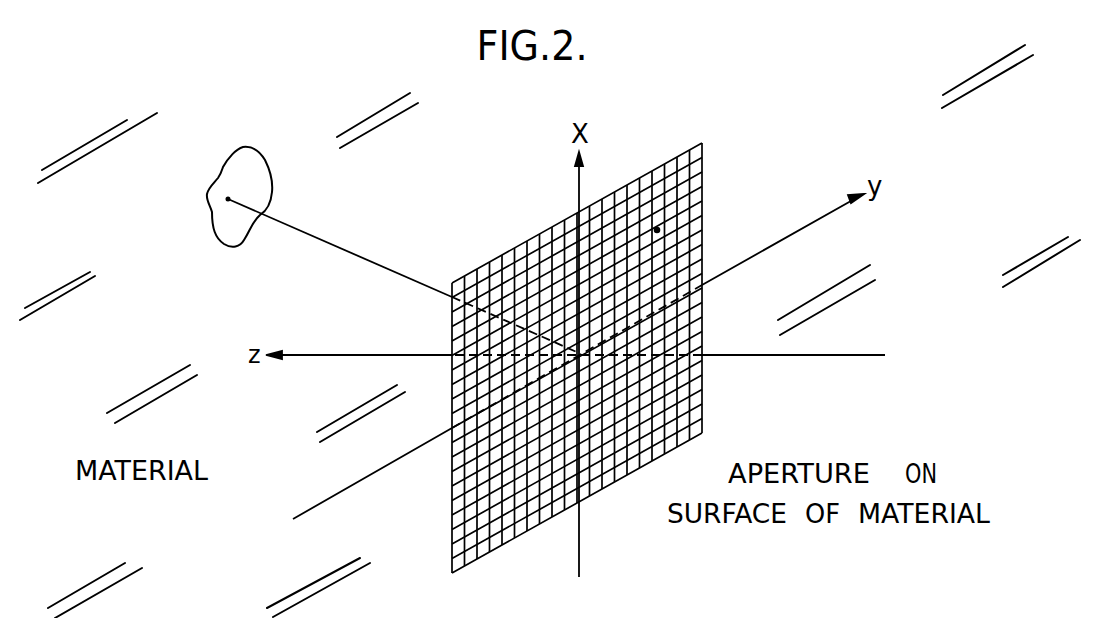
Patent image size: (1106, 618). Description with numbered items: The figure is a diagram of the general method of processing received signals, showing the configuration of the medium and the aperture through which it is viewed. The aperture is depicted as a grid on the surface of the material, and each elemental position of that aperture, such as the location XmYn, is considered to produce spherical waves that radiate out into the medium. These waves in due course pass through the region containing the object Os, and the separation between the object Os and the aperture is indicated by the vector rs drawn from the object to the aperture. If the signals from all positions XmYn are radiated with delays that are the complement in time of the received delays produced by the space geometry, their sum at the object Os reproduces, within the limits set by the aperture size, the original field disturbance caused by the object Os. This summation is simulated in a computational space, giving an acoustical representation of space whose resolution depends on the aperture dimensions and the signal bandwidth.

The object Os is at (255, 197).
The vector r_s(x,y) from source to aperture rs is at (403, 276).
The signal location on the aperture XmYn is at (657, 230).
The aperture on surface of material grid is at (577, 358).